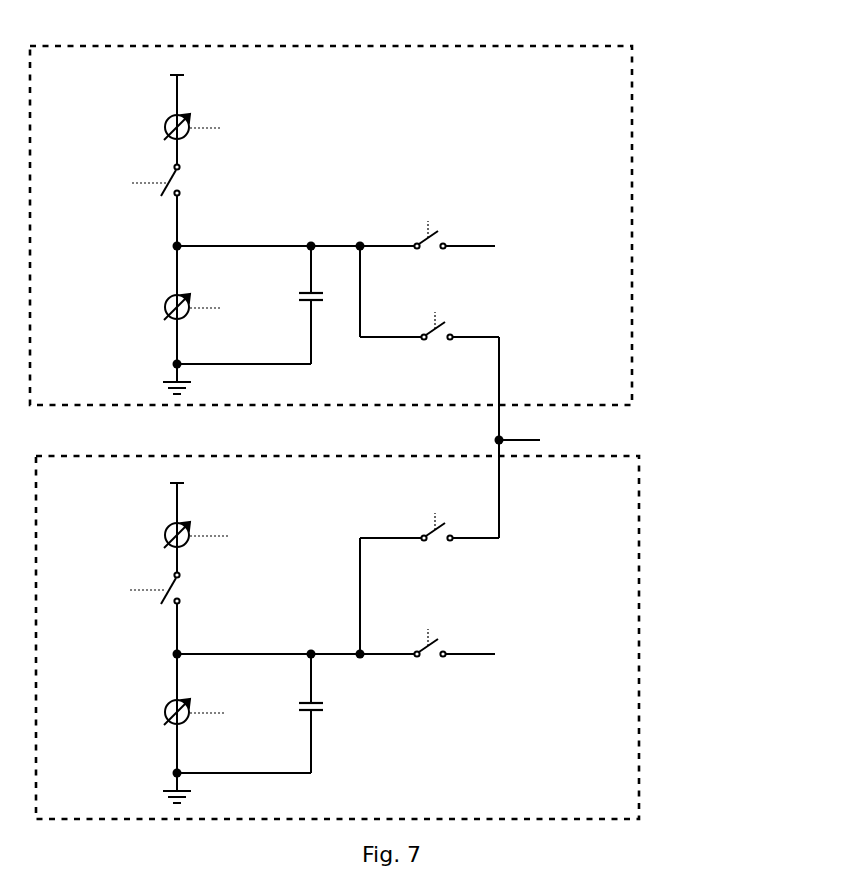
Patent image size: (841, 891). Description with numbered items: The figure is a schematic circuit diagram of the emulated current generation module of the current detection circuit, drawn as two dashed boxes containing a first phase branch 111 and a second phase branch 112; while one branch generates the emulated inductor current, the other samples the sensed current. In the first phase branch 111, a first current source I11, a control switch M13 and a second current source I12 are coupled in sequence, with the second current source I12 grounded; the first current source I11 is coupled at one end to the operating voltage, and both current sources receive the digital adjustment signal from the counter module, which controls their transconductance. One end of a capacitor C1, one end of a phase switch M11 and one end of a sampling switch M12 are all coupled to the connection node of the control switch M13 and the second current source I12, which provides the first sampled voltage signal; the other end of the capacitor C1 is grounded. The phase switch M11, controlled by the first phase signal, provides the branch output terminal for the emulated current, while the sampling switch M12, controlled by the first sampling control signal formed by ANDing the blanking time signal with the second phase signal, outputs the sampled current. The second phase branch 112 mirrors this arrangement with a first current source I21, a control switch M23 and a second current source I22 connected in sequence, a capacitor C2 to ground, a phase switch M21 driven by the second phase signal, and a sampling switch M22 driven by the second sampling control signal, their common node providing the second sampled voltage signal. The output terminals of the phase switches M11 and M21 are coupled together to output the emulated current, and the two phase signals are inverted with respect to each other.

The first phase branch 111 is at (383, 292).
The second phase branch 112 is at (389, 637).
The first current source I11 is at (193, 117).
The second current source I12 is at (193, 295).
The control switch M13 is at (171, 180).
The sampling switch M12 is at (424, 250).
The phase switch M11 is at (434, 342).
The capacitor C1 is at (315, 309).
The first current source I21 is at (197, 532).
The second current source I22 is at (195, 707).
The control switch M23 is at (170, 588).
The phase switch M21 is at (434, 542).
The sampling switch M22 is at (429, 656).
The capacitor C2 is at (324, 710).